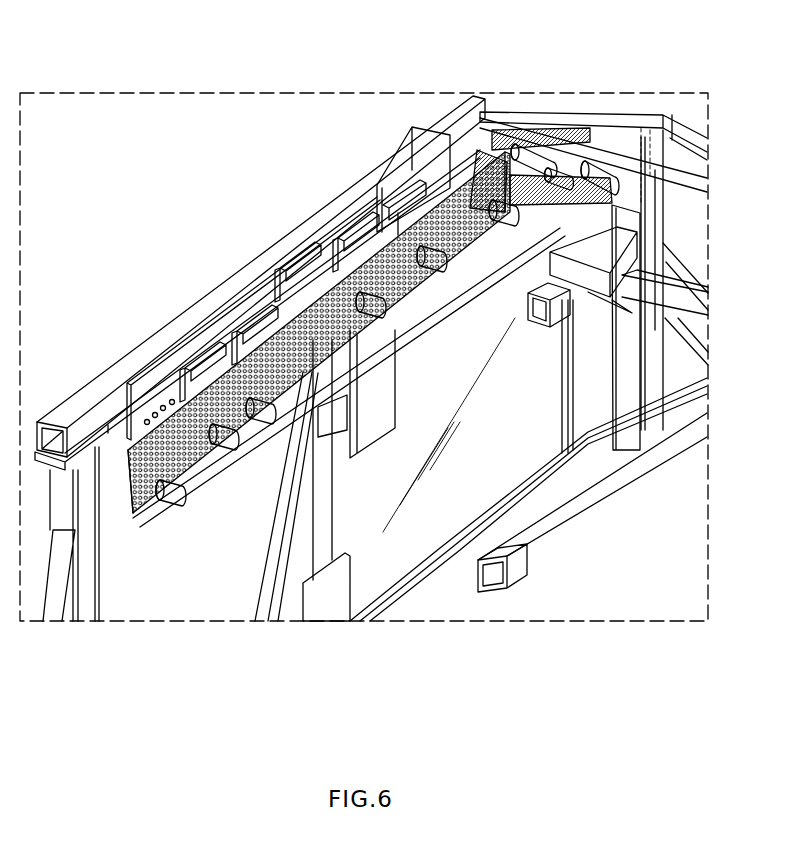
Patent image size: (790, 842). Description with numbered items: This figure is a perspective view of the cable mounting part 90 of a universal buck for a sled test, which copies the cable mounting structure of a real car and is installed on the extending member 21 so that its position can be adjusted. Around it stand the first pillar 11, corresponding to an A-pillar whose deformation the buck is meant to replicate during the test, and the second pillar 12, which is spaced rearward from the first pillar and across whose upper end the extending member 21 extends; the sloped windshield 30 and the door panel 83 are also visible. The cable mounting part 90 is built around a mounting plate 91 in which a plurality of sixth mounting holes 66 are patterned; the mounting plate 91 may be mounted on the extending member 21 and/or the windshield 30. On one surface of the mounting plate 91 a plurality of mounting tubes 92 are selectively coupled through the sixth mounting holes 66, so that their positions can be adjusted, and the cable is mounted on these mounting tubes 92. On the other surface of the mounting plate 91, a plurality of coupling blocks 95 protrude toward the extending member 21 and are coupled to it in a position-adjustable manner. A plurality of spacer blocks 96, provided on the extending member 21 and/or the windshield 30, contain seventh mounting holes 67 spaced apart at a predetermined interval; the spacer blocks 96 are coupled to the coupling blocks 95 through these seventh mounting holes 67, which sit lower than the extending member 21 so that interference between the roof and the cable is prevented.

The first pillar 11 is at (655, 222).
The second pillar 12 is at (263, 560).
The extending member 21 is at (80, 403).
The windshield 30 is at (676, 150).
The sixth mounting holes 66 is at (175, 463).
The seventh mounting holes 67 is at (147, 395).
The panel 83 is at (515, 458).
The cable mounting part 90 is at (482, 94).
The mounting plate 91 is at (200, 453).
The mounting tube 92 is at (407, 243).
The coupling block 95 is at (215, 357).
The spacer block 96 is at (130, 384).